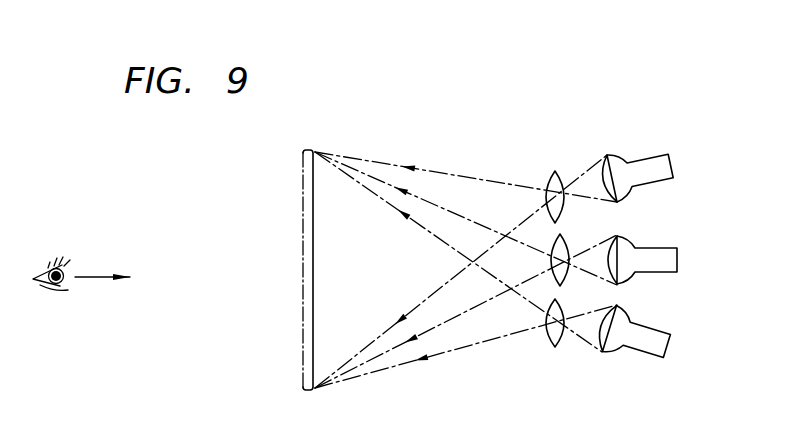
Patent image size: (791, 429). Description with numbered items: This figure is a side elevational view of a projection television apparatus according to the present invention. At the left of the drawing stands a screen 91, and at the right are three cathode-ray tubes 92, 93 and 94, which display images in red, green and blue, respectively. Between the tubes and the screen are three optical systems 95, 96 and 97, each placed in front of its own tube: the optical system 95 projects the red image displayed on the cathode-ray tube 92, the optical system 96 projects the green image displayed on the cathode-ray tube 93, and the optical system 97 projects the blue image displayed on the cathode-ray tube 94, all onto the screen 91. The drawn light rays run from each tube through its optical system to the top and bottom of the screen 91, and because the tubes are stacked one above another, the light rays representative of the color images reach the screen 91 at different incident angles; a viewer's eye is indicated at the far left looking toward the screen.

The screen 91 is at (303, 151).
The cathode-ray tube 92 is at (656, 331).
The cathode-ray tube 93 is at (650, 248).
The cathode-ray tube 94 is at (645, 161).
The optical system 95 is at (560, 346).
The optical system 96 is at (565, 243).
The optical system 97 is at (553, 168).